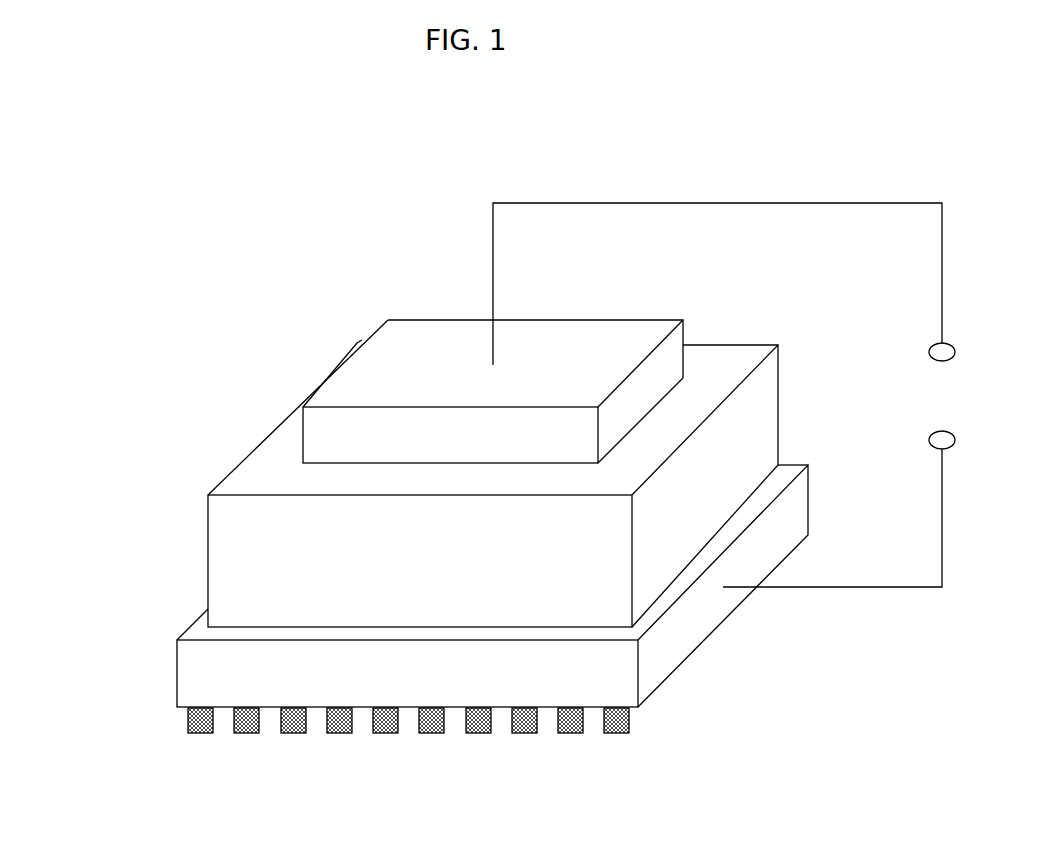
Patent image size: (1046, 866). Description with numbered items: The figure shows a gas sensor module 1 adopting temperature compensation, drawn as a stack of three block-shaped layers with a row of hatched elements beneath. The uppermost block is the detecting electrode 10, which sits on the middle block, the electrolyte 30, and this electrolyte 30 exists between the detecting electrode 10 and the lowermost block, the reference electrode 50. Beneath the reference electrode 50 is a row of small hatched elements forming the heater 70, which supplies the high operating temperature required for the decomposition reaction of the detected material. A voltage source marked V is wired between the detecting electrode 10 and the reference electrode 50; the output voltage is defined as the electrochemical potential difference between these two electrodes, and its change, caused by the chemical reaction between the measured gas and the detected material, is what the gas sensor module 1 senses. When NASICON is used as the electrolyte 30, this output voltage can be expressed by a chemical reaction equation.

The gas sensor module 1 is at (836, 147).
The detecting electrode 10 is at (428, 340).
The electrolyte 30 is at (267, 465).
The reference electrode 50 is at (230, 677).
The heater 70 is at (187, 728).